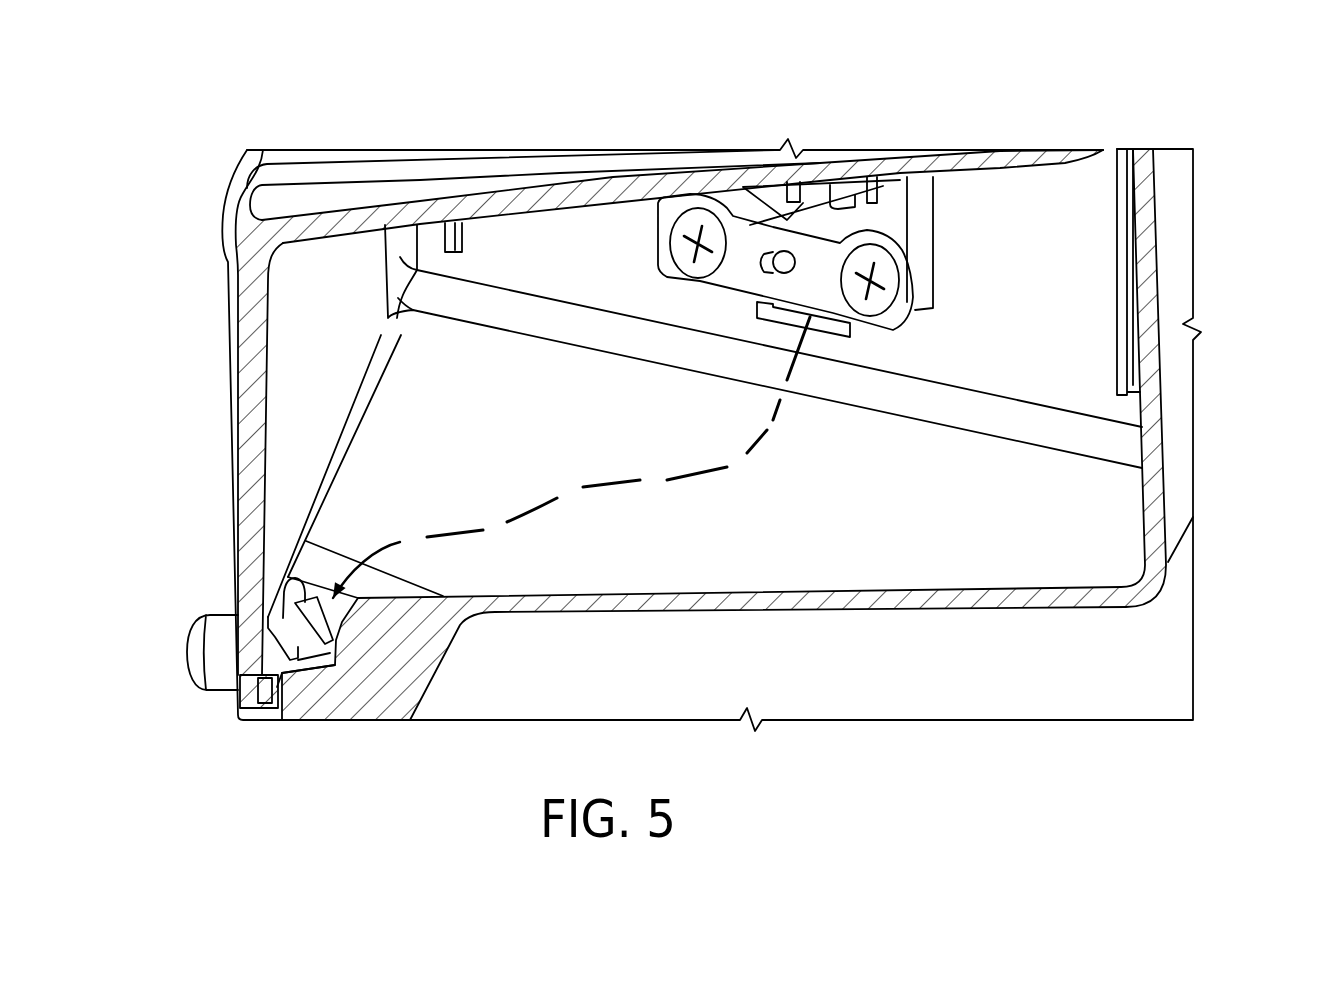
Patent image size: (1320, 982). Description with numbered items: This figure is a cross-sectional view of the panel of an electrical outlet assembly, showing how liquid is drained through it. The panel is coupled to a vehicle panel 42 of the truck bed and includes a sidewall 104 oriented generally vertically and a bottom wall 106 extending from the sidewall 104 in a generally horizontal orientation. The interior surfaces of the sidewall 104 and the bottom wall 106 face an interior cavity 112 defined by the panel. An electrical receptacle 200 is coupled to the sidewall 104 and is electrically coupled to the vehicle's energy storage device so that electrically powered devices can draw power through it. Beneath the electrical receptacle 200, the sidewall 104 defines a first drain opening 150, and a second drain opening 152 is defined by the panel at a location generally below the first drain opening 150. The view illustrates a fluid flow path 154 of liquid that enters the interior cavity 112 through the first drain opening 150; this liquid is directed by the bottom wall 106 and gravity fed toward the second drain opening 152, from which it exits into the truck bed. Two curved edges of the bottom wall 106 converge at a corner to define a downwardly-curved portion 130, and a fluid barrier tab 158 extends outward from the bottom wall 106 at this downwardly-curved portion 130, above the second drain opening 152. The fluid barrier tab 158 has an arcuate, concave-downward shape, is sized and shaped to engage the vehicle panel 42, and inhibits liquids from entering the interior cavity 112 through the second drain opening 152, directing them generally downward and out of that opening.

The vehicle panel 42 is at (235, 374).
The sidewall 104 is at (613, 229).
The bottom wall 106 is at (702, 595).
The interior cavity 112 is at (427, 405).
The downwardly-curved portion 130 is at (333, 610).
The first drain opening 150 is at (843, 333).
The second drain opening 152 is at (308, 705).
The fluid flow path 154 is at (540, 510).
The fluid barrier tab 158 is at (295, 577).
The electrical receptacle 200 is at (962, 221).